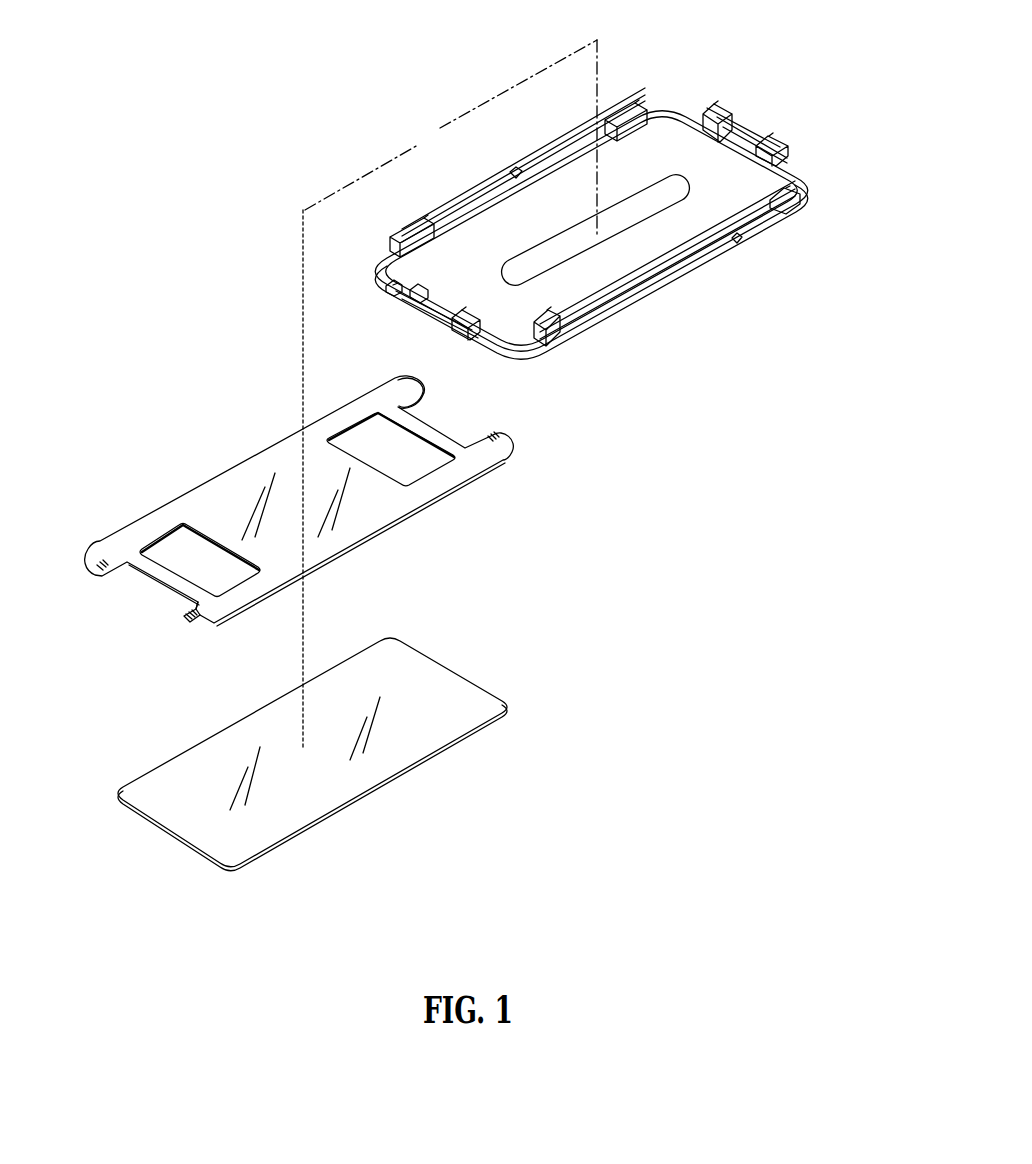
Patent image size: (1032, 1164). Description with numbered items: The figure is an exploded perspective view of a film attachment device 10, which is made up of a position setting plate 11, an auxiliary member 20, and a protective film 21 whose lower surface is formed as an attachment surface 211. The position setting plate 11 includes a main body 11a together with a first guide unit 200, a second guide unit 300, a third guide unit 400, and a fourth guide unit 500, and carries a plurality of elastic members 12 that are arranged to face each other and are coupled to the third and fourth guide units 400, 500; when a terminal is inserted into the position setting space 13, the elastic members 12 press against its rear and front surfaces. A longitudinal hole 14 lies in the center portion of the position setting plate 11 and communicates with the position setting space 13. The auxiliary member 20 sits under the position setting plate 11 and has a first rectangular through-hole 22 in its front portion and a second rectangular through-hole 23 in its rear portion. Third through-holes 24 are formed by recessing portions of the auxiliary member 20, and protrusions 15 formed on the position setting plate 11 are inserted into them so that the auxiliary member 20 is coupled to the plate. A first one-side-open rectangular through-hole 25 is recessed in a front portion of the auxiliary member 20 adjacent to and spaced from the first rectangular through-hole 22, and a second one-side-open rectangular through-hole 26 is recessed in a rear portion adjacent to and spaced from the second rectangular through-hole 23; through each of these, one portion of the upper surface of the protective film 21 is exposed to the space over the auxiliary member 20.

The film attachment device 10 is at (797, 373).
The position setting plate 11 is at (677, 283).
The main body 11a is at (802, 205).
The elastic members 12 is at (715, 106).
The position setting space 13 is at (490, 243).
The longitudinal hole 14 is at (580, 212).
The protrusions 15 is at (710, 110).
The auxiliary member 20 is at (437, 500).
The protective film 21 is at (413, 740).
The attachment surface 211 is at (307, 827).
The first rectangular through-hole 22 is at (180, 550).
The second rectangular through-hole 23 is at (362, 435).
The third through-holes 24 is at (100, 567).
The first one-side-open rectangular through-hole 25 is at (157, 587).
The second one-side-open rectangular through-hole 26 is at (450, 430).
The first guide unit 200 is at (743, 237).
The second guide unit 300 is at (622, 97).
The third guide unit 400 is at (440, 317).
The fourth guide unit 500 is at (755, 123).